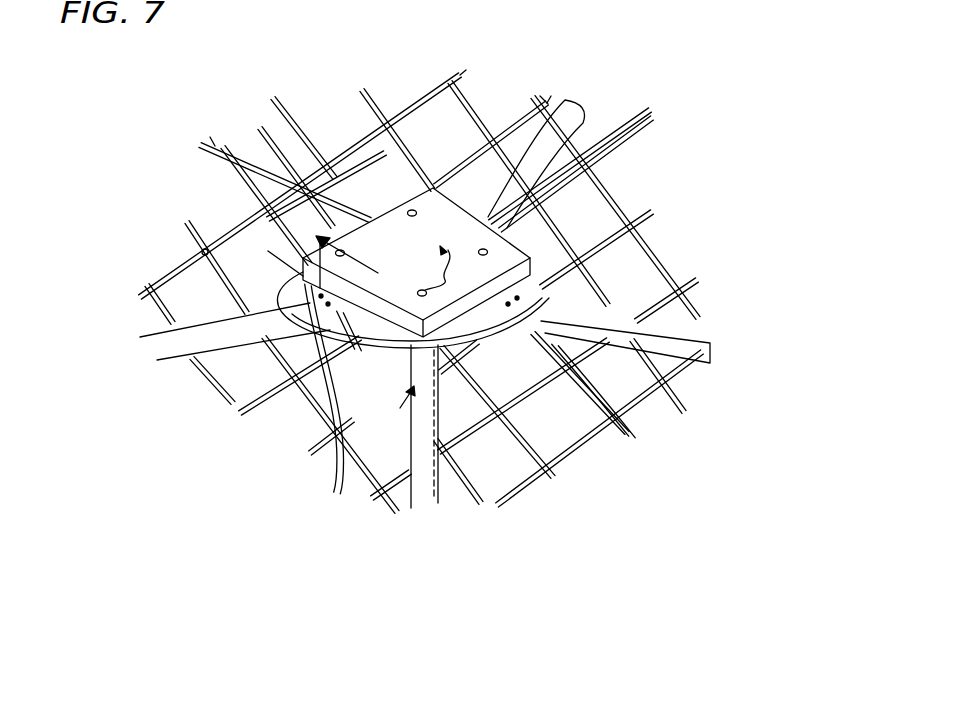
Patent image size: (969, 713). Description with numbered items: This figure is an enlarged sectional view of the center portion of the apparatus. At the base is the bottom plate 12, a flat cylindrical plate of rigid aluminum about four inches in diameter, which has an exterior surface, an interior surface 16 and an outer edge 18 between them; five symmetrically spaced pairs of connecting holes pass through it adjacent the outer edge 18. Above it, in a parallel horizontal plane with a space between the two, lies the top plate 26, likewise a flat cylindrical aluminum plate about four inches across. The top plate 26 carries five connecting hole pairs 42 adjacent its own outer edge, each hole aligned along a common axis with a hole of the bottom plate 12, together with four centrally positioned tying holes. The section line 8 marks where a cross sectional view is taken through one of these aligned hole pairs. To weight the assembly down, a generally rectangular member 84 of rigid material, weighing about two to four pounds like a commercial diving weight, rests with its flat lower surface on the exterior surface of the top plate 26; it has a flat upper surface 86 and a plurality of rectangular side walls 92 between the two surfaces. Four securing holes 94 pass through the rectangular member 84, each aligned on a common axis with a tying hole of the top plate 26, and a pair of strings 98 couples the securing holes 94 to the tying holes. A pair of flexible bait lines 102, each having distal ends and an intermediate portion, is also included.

The section line 8- 8 is at (365, 332).
The bottom plate 12 is at (702, 362).
The interior surface 16 is at (490, 337).
The outer edge 18 is at (500, 395).
The top plate 26 is at (300, 333).
The connecting hole pairs 42 is at (300, 330).
The rectangular member 84 is at (543, 223).
The flat upper surface 86 is at (575, 294).
The rectangular side walls 92 is at (203, 252).
The securing holes 94 is at (542, 97).
The strings 98 is at (257, 205).
The bait lines 102 is at (313, 153).